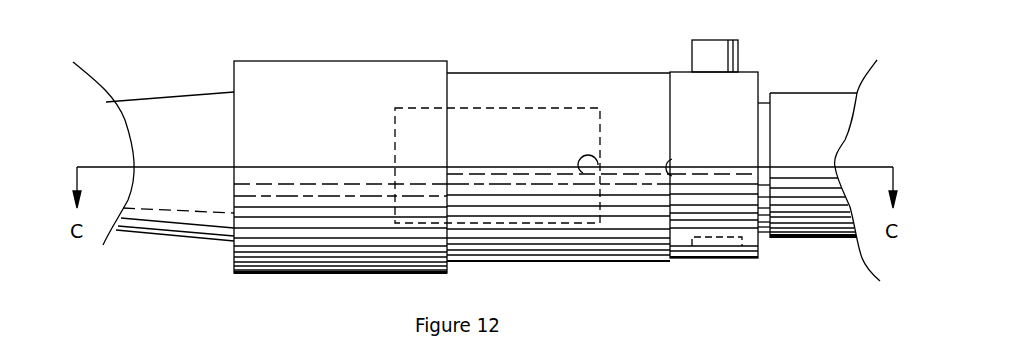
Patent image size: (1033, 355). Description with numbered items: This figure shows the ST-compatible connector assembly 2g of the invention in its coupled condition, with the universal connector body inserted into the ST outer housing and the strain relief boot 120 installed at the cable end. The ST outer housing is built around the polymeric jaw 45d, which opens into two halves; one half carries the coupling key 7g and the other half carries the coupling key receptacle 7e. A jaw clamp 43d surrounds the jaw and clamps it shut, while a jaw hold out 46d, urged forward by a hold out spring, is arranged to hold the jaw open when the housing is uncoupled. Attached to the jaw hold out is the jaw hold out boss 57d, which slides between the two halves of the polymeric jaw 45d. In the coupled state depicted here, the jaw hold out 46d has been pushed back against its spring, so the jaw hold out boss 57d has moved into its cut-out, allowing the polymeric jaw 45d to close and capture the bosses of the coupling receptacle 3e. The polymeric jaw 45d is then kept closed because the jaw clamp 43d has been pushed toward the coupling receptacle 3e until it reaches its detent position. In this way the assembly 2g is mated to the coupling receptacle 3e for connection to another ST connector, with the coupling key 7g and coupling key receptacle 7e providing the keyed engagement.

The ST-compatible connector assembly 2g is at (363, 138).
The coupling key 7g is at (740, 62).
The strain relief boot 120 is at (145, 232).
The jaw hold out 46d is at (507, 227).
The jaw clamp 43d is at (510, 262).
The jaw hold out boss 57d is at (592, 172).
The coupling key receptacle 7e is at (708, 261).
The polymeric jaw 45d is at (762, 257).
The coupling receptacle 3e is at (803, 240).